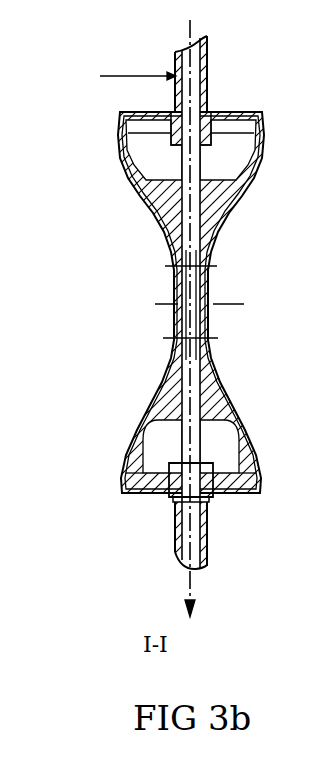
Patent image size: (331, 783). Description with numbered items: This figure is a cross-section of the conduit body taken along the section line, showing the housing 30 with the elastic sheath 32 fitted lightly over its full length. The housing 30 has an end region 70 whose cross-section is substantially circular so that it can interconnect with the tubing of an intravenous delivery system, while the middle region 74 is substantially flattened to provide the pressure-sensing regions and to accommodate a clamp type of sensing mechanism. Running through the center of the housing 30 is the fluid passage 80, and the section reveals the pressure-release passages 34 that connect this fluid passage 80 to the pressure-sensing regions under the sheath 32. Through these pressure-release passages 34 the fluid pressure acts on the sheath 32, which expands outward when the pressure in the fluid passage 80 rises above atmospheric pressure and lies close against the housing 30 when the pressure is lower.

The housing 30 is at (113, 496).
The sheath 32 is at (120, 450).
The pressure-release passages 34 is at (199, 302).
The end region 70 is at (127, 143).
The middle region 74 is at (170, 282).
The fluid passage 80 is at (189, 293).